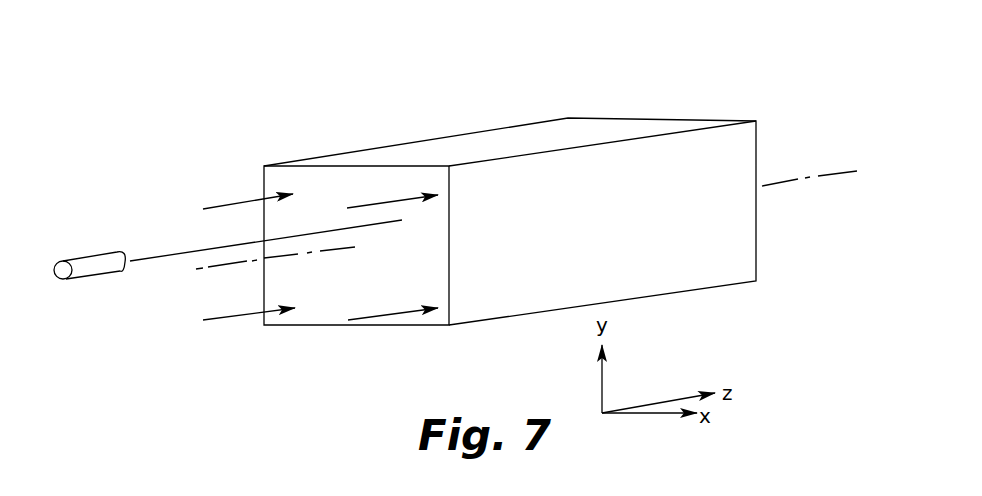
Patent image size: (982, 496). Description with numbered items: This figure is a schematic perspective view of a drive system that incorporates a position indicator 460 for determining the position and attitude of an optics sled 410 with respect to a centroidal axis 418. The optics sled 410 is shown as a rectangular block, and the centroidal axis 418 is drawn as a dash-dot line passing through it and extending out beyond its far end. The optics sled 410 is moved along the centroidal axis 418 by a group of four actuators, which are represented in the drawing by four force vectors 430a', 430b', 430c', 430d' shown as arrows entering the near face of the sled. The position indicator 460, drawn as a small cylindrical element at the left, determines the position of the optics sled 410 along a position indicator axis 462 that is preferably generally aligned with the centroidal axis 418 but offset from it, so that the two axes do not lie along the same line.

The optics sled 410 is at (585, 128).
The centroidal axis 418 is at (222, 267).
The force vector 430a' is at (385, 155).
The force vector 430b' is at (393, 346).
The force vector 430c' is at (246, 346).
The force vector 430d' is at (242, 178).
The position indicator 460 is at (95, 270).
The position indicator axis 462 is at (162, 260).